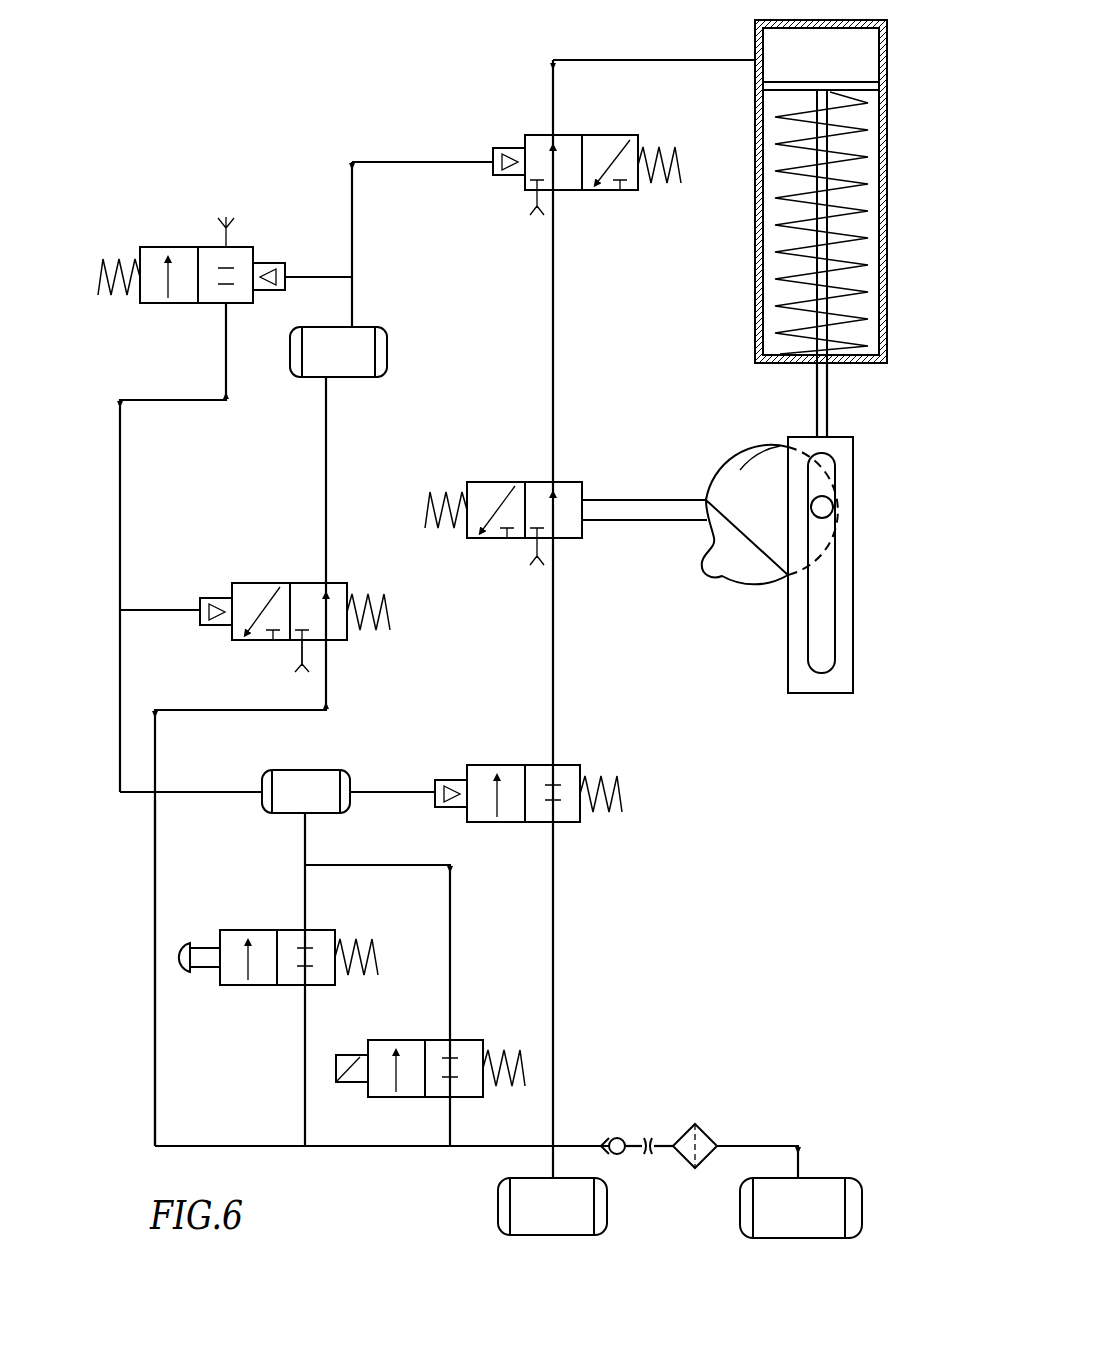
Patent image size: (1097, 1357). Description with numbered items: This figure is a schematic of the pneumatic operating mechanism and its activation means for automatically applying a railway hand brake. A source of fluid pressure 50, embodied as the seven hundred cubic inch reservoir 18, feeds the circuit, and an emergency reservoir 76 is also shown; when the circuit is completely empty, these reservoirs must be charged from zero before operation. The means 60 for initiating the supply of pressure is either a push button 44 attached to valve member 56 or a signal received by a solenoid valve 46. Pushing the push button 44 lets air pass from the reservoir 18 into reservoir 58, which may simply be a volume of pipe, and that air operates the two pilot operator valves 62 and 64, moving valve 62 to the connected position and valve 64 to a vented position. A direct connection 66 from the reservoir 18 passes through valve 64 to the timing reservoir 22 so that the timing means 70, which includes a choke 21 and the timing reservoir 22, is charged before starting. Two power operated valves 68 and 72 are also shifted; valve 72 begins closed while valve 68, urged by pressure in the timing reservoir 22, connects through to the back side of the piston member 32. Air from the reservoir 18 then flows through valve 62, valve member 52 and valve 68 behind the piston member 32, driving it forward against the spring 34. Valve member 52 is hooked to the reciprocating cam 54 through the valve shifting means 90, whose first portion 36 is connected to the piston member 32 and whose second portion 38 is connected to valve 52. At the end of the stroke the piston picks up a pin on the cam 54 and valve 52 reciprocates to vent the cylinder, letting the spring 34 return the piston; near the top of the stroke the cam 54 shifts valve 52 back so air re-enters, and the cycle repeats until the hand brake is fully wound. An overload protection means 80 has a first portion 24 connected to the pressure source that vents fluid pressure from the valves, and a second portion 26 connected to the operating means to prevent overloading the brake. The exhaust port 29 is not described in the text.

The reservoir 18 is at (607, 1196).
The choke 21 is at (300, 657).
The timing reservoir 22 is at (362, 377).
The first portion of overload protection means 24 is at (530, 565).
The second portion of overload protection means 26 is at (740, 485).
The exhaust port 29 is at (530, 213).
The piston member 32 is at (806, 88).
The spring 34 is at (782, 133).
The first portion of valve shifting means 36 is at (822, 673).
The second portion of valve shifting means 38 is at (620, 498).
The push button 44 is at (184, 972).
The solenoid valve 46 is at (466, 1042).
The source of fluid pressure 50 is at (485, 1200).
The valve member 52 is at (543, 485).
The reciprocating cam 54 is at (770, 456).
The valve member 56 is at (322, 930).
The reservoir 58 is at (295, 770).
The means for initiating supply of predetermined pressure 60 is at (150, 960).
The pilot operator valve 62 is at (520, 768).
The pilot operator valve 64 is at (258, 586).
The direct connection 66 is at (153, 862).
The power operated valve 68 is at (540, 140).
The timing means 70 is at (392, 328).
The power operated valve 72 is at (197, 250).
The emergency reservoir 76 is at (740, 1208).
The overload protection means 80 is at (787, 705).
The valve shifting means 90 is at (737, 598).